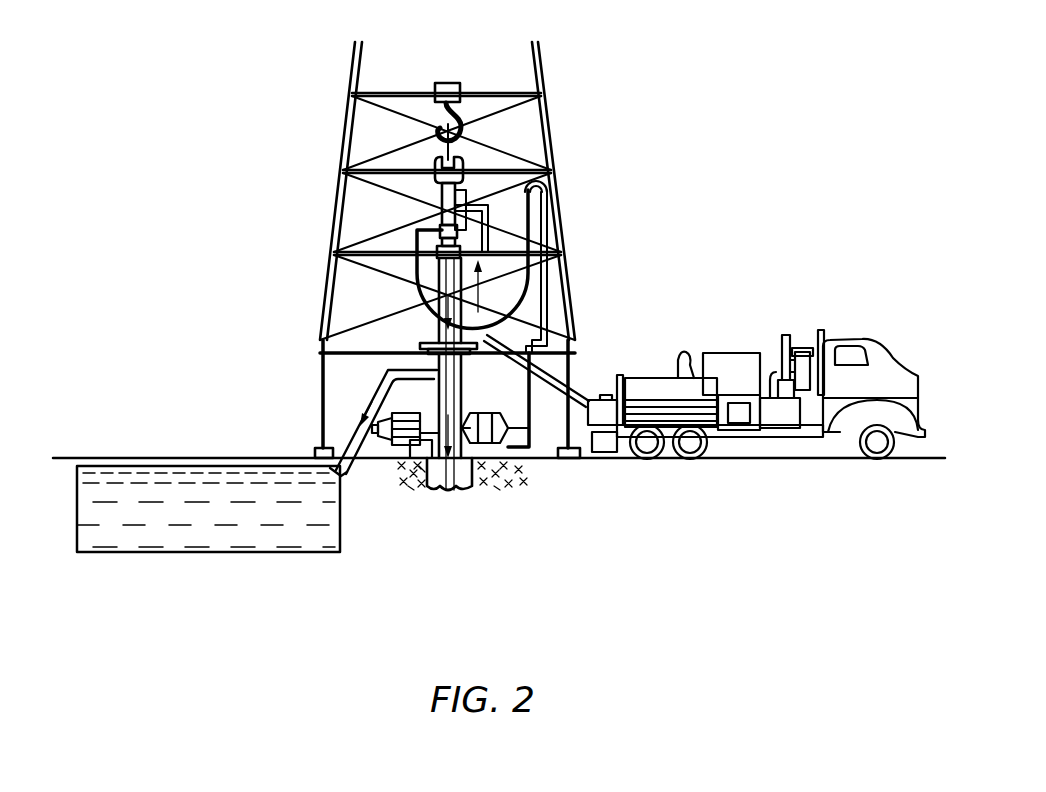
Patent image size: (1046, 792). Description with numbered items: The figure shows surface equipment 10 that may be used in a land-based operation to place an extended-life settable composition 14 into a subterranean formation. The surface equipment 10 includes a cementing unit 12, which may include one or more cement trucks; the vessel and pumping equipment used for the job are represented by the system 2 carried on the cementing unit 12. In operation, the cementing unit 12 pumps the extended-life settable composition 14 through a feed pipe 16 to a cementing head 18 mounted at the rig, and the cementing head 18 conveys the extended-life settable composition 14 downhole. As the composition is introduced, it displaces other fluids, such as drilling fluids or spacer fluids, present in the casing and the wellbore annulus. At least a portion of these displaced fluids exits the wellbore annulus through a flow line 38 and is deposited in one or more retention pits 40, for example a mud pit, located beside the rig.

The surface equipment 10 is at (790, 94).
The cementing head 18 is at (483, 160).
The extended-life settable composition 14 is at (445, 290).
The feed pipe 16 is at (535, 370).
The system 2 is at (740, 333).
The cementing unit 12 is at (808, 442).
The flow line 38 is at (360, 447).
The retention pit 40 is at (127, 553).